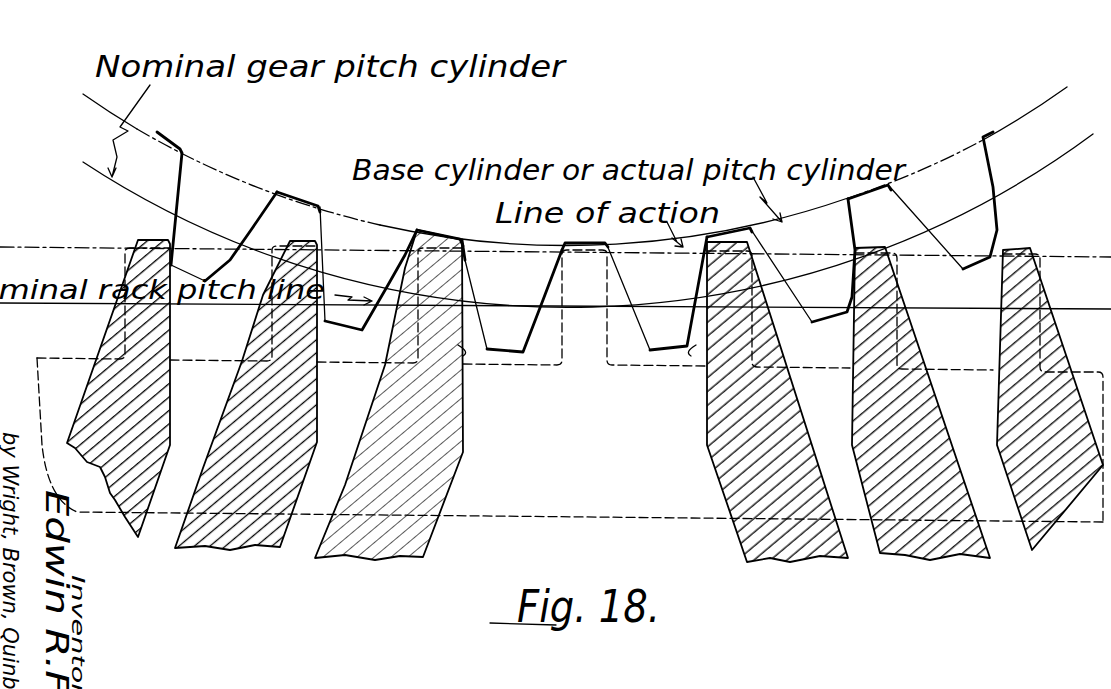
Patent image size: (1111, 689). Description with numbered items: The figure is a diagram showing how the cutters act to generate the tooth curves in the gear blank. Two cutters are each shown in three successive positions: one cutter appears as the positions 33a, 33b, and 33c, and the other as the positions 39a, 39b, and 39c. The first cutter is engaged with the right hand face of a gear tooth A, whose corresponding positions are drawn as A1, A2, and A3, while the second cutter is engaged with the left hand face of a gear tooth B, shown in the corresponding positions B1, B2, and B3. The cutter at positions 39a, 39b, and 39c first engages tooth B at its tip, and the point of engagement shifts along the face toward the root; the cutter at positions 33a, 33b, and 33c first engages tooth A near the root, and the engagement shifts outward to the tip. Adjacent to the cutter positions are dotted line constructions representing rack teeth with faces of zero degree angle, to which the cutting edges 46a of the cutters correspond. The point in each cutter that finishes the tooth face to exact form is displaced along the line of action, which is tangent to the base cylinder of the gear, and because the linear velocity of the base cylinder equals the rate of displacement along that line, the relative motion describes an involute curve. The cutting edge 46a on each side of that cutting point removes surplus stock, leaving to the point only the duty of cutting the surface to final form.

The cutter position 39a is at (110, 412).
The cutter position 39b is at (263, 410).
The cutter position 39c is at (422, 460).
The cutter position 33a is at (748, 453).
The cutter position 33b is at (878, 400).
The cutter position 33c is at (1023, 412).
The gear tooth position B1 is at (210, 197).
The gear tooth position B2 is at (350, 233).
The gear tooth position B3 is at (517, 337).
The gear tooth position A1 is at (670, 340).
The gear tooth position A2 is at (800, 240).
The gear tooth position A3 is at (933, 200).
The cutting edge 46a is at (463, 356).